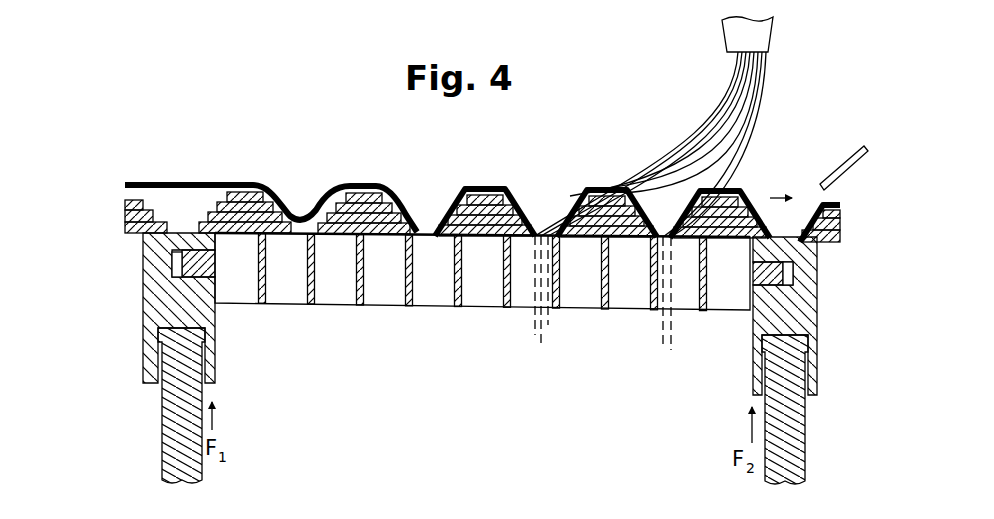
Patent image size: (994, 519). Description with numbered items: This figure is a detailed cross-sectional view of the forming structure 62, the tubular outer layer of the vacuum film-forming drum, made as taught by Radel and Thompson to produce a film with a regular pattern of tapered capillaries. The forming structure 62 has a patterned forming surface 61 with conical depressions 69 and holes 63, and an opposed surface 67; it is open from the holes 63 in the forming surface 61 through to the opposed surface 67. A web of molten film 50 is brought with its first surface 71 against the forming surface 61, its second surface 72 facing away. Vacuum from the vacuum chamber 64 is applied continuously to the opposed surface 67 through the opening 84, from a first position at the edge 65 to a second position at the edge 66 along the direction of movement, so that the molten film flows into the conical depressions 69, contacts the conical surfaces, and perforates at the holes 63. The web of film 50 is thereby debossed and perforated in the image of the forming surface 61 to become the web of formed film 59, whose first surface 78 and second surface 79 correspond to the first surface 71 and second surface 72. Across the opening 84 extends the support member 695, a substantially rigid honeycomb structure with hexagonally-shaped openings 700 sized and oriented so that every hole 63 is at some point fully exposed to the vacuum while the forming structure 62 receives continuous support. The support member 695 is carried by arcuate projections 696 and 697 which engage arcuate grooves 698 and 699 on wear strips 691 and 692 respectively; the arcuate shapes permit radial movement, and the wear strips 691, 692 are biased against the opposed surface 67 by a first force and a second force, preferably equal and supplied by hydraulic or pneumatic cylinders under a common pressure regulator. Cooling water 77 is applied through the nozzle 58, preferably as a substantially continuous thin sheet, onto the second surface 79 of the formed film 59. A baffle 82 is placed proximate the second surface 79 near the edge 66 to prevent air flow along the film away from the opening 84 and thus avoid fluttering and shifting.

The web of film 50 is at (190, 182).
The nozzle 58 is at (773, 35).
The web of formed film 59 is at (485, 190).
The forming surface 61 is at (212, 202).
The forming structure 62 is at (114, 222).
The holes 63 is at (418, 227).
The vacuum chamber 64 is at (473, 421).
The edge 65 is at (220, 243).
The edge 66 is at (742, 250).
The opposed surface 67 is at (348, 240).
The conical depressions 69 is at (200, 207).
The first surface 71 is at (203, 188).
The second surface 72 is at (233, 192).
The cooling water 77 is at (760, 110).
The first surface 78 is at (453, 210).
The second surface 79 is at (522, 212).
The baffle 82 is at (847, 157).
The opening 84 is at (389, 334).
The wear strip 691 is at (217, 367).
The wear strip 692 is at (749, 377).
The support member 695 is at (571, 307).
The arcuate projection 696 is at (192, 280).
The arcuate projection 697 is at (767, 278).
The arcuate groove 698 is at (196, 266).
The arcuate groove 699 is at (787, 268).
The hexagonally-shaped openings 700 is at (440, 290).